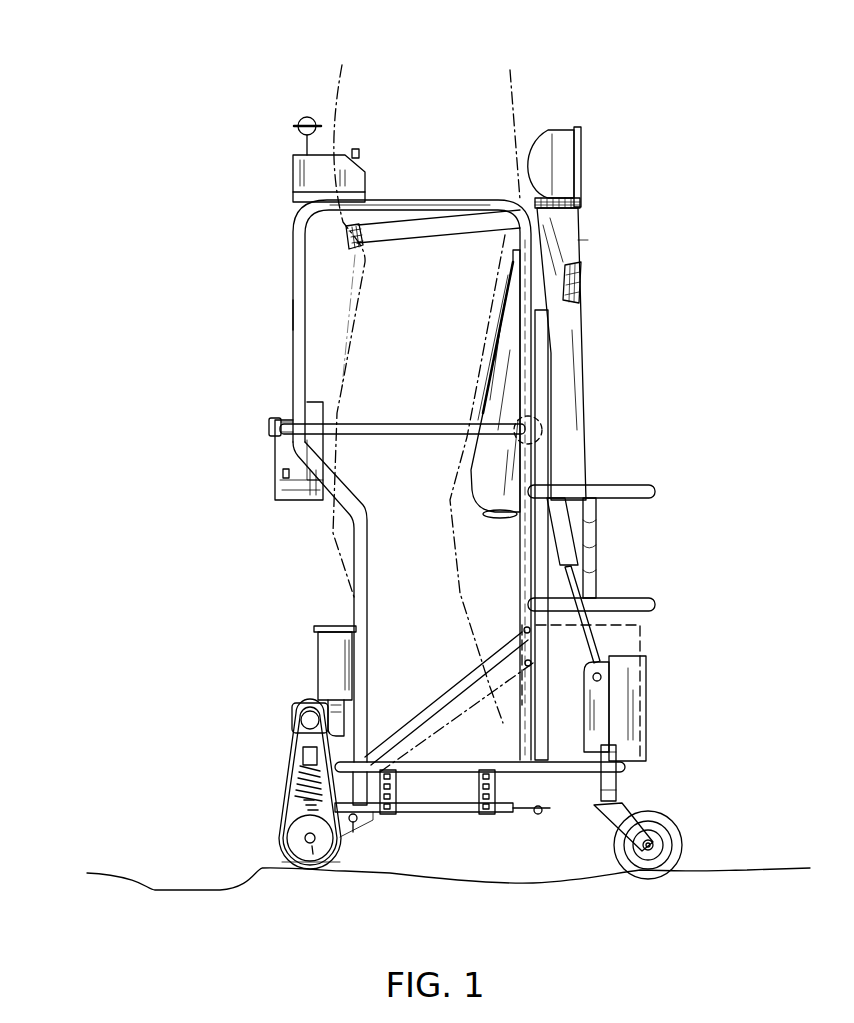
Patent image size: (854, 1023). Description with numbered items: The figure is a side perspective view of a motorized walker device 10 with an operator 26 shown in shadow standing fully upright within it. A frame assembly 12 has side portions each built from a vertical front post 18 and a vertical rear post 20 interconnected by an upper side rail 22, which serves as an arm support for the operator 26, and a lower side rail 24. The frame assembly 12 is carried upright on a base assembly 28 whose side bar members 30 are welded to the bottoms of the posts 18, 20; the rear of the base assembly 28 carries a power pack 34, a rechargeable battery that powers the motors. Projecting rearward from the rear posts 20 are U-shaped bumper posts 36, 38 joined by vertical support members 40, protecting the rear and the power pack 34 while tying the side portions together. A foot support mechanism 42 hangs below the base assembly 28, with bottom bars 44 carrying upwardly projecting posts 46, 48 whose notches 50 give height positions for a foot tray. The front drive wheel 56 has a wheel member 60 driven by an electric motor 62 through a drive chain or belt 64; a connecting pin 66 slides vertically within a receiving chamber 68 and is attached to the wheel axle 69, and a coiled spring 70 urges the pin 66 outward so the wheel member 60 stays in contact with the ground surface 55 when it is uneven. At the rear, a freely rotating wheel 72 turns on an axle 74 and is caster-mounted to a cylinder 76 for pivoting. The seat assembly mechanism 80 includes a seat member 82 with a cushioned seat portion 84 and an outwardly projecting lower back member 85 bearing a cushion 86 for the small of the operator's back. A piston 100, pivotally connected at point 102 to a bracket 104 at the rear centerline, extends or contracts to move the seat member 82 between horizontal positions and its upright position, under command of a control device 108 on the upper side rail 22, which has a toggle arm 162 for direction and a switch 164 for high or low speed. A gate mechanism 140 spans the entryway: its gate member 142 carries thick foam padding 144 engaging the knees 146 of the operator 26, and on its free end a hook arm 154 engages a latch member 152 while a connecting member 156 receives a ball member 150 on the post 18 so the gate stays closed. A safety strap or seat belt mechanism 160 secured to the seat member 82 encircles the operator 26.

The motorized walker device 10 is at (628, 232).
The frame assembly 12 is at (292, 263).
The vertical front post 18 is at (295, 297).
The vertical rear post 20 is at (526, 288).
The upper side rail 22 is at (422, 200).
The lower side rail 24 is at (358, 424).
The operator 26 is at (500, 92).
The base assembly 28 is at (580, 772).
The side bar member 30 is at (472, 692).
The power pack 34 is at (626, 640).
The U-shaped bumper post 36 is at (628, 602).
The U-shaped bumper post 38 is at (618, 488).
The vertical support member 40 is at (596, 544).
The foot support mechanism 42 is at (460, 820).
The bottom bar 44 is at (441, 815).
The upwardly projecting post 46 is at (446, 815).
The upwardly projecting post 48 is at (490, 788).
The notch 50 is at (392, 800).
The ground surface 55 is at (128, 874).
The drive wheel 56 is at (316, 860).
The wheel member 60 is at (290, 845).
The electric motor 62 is at (325, 640).
The drive chain or belt 64 is at (300, 778).
The connecting pin 66 is at (300, 800).
The receiving chamber 68 is at (312, 760).
The wheel axle 69 is at (308, 843).
The coiled spring 70 is at (302, 795).
The freely rotating wheel 72 is at (683, 847).
The axle 74 is at (650, 832).
The cylinder 76 is at (610, 782).
The seat assembly mechanism 80 is at (582, 249).
The seat member 82 is at (580, 283).
The cushioned seat portion 84 is at (560, 232).
The lower back member 85 is at (582, 156).
The cushion 86 is at (551, 145).
The piston 100 is at (568, 548).
The pivot point 102 is at (600, 678).
The bracket 104 is at (600, 718).
The control device 108 is at (295, 176).
The gate mechanism 140 is at (212, 474).
The gate member 142 is at (276, 452).
The foam padding 144 is at (315, 410).
The knees 146 is at (320, 454).
The ball member 150 is at (268, 427).
The latch member 152 is at (263, 526).
The hook arm 154 is at (282, 476).
The connecting member 156 is at (280, 420).
The safety strap or seat belt mechanism 160 is at (452, 225).
The toggle arm 162 is at (308, 114).
The switch 164 is at (357, 149).